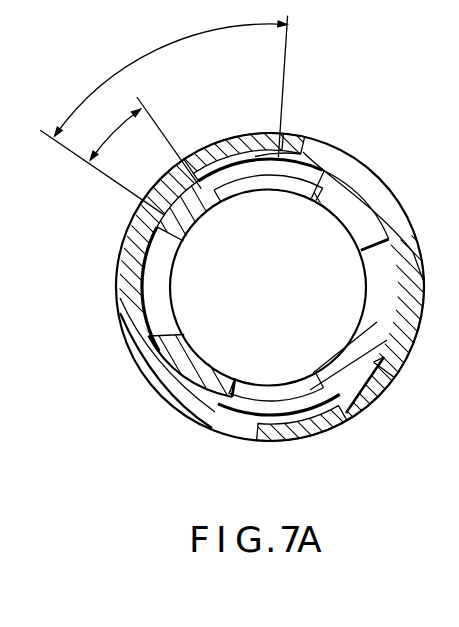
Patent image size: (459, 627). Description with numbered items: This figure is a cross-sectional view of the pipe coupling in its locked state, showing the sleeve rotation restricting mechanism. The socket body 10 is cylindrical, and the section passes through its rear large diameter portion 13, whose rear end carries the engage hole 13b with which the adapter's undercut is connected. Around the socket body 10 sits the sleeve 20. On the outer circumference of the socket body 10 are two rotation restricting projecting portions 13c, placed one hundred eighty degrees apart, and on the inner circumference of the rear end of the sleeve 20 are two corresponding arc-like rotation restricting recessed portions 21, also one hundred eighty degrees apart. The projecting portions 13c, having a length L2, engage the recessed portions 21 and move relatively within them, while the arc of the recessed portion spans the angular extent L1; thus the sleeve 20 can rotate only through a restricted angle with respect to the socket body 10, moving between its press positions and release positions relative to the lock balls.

The socket body 10 is at (400, 275).
The sleeve 20 is at (389, 183).
The rotation restricting recessed portion 21 is at (230, 146).
The large diameter portion 13 is at (366, 224).
The engage hole 13b is at (303, 181).
The rotation restricting projecting portion 13c is at (180, 174).
The angular distance L1 is at (163, 115).
The length of rotation restricting projecting portion L2 is at (143, 143).